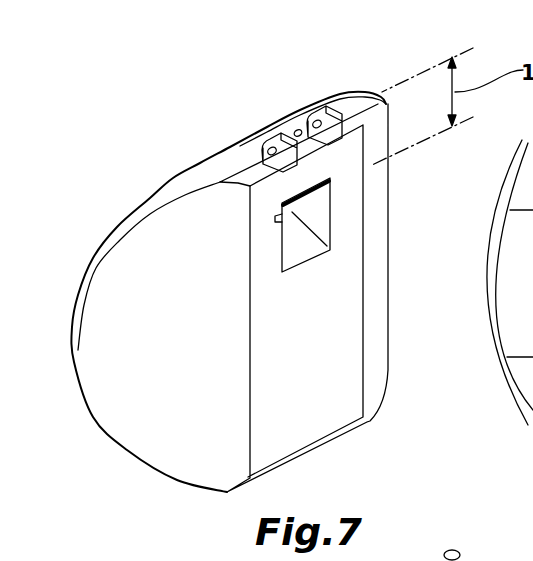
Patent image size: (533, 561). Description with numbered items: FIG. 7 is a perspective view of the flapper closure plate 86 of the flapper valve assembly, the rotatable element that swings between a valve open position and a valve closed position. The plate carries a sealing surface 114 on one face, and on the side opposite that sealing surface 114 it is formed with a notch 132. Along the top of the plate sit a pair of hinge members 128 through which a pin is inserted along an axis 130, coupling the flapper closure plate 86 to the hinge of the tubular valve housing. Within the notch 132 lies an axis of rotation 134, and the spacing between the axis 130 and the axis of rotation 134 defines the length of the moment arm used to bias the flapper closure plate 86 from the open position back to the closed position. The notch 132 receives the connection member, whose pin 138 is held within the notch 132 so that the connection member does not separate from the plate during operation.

The flapper closure plate 86 is at (118, 231).
The sealing surface 114 is at (173, 180).
The hinge members 128 is at (323, 110).
The axis 130 is at (448, 79).
The notch 132 is at (303, 208).
The axis of rotation 134 is at (443, 133).
The pin 138 is at (458, 547).